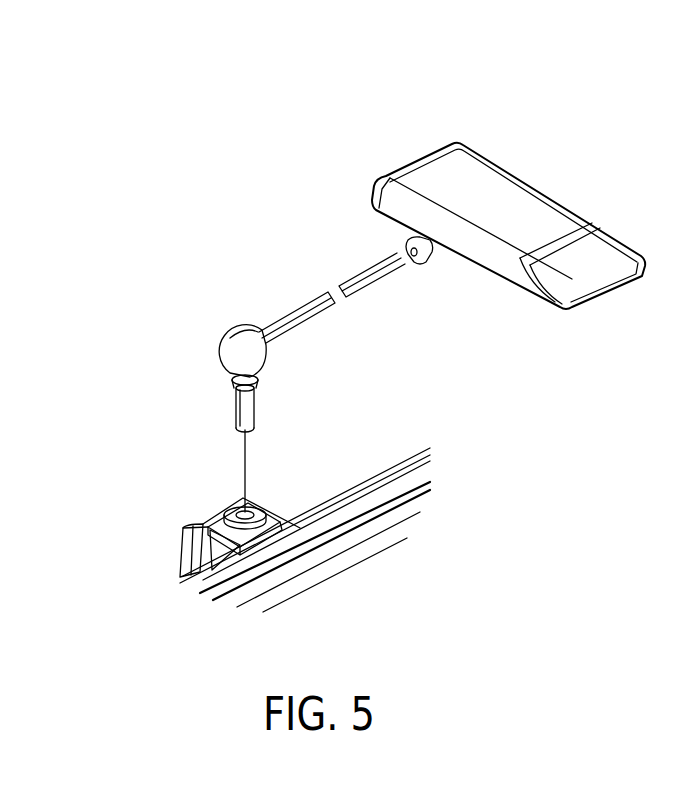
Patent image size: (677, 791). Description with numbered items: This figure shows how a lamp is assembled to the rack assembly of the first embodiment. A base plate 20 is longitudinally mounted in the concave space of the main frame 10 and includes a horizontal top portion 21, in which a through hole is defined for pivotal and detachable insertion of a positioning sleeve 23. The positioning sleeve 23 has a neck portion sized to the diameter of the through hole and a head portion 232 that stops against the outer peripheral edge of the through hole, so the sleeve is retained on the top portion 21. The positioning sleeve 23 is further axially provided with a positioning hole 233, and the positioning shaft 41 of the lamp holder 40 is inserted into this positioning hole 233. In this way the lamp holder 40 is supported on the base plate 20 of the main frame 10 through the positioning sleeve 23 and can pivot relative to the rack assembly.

The main frame 10 is at (373, 560).
The base plate 20 is at (200, 557).
The top portion 21 is at (259, 507).
The positioning sleeve 23 is at (251, 500).
The head portion 232 is at (233, 512).
The positioning hole 233 is at (237, 513).
The lamp holder 40 is at (437, 170).
The positioning shaft 41 is at (233, 417).